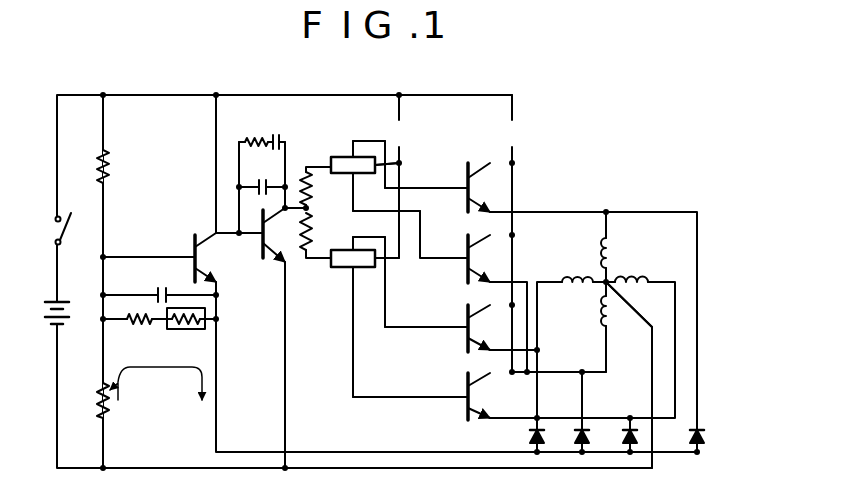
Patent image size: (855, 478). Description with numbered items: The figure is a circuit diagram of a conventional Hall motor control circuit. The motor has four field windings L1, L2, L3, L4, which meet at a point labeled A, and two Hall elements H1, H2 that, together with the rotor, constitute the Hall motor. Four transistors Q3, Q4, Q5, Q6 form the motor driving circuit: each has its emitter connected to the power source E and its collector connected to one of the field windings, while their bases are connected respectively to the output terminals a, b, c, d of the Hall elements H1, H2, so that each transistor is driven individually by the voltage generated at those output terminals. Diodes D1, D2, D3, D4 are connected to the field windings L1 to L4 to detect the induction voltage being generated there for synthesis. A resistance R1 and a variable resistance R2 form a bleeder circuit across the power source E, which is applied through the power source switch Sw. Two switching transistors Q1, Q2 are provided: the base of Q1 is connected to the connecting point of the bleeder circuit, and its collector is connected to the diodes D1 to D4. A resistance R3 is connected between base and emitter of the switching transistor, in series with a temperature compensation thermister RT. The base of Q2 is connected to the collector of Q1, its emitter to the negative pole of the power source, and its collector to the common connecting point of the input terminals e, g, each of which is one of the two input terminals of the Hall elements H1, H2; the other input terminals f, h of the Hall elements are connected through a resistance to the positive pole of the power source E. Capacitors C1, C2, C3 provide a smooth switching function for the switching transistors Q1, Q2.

The resistance R1 is at (117, 168).
The power source switch Sw is at (49, 229).
The power source E is at (45, 316).
The capacitor C1 is at (161, 289).
The resistance R3 is at (135, 335).
The temperature compensation thermister RT is at (189, 330).
The variable resistance R2 is at (135, 392).
The switching transistor Q1 is at (198, 254).
The switching transistor Q2 is at (277, 262).
The capacitor C3 is at (271, 139).
The capacitor C2 is at (262, 171).
The Hall element H1 is at (340, 160).
The Hall element H2 is at (345, 267).
The output terminal a is at (351, 164).
The output terminal b is at (354, 176).
The output terminal c is at (350, 253).
The output terminal d is at (353, 268).
The input terminal e is at (331, 167).
The input terminal f is at (399, 163).
The input terminal g is at (331, 258).
The input terminal h is at (381, 259).
The transistor Q3 is at (471, 175).
The transistor Q4 is at (472, 250).
The transistor Q5 is at (472, 320).
The transistor Q6 is at (478, 398).
The field winding L1 is at (610, 248).
The field winding L2 is at (577, 263).
The field winding L3 is at (603, 310).
The field winding L4 is at (637, 276).
The common terminal of windings A is at (636, 299).
The diode D1 is at (705, 436).
The diode D2 is at (530, 436).
The diode D3 is at (586, 427).
The diode D4 is at (632, 427).